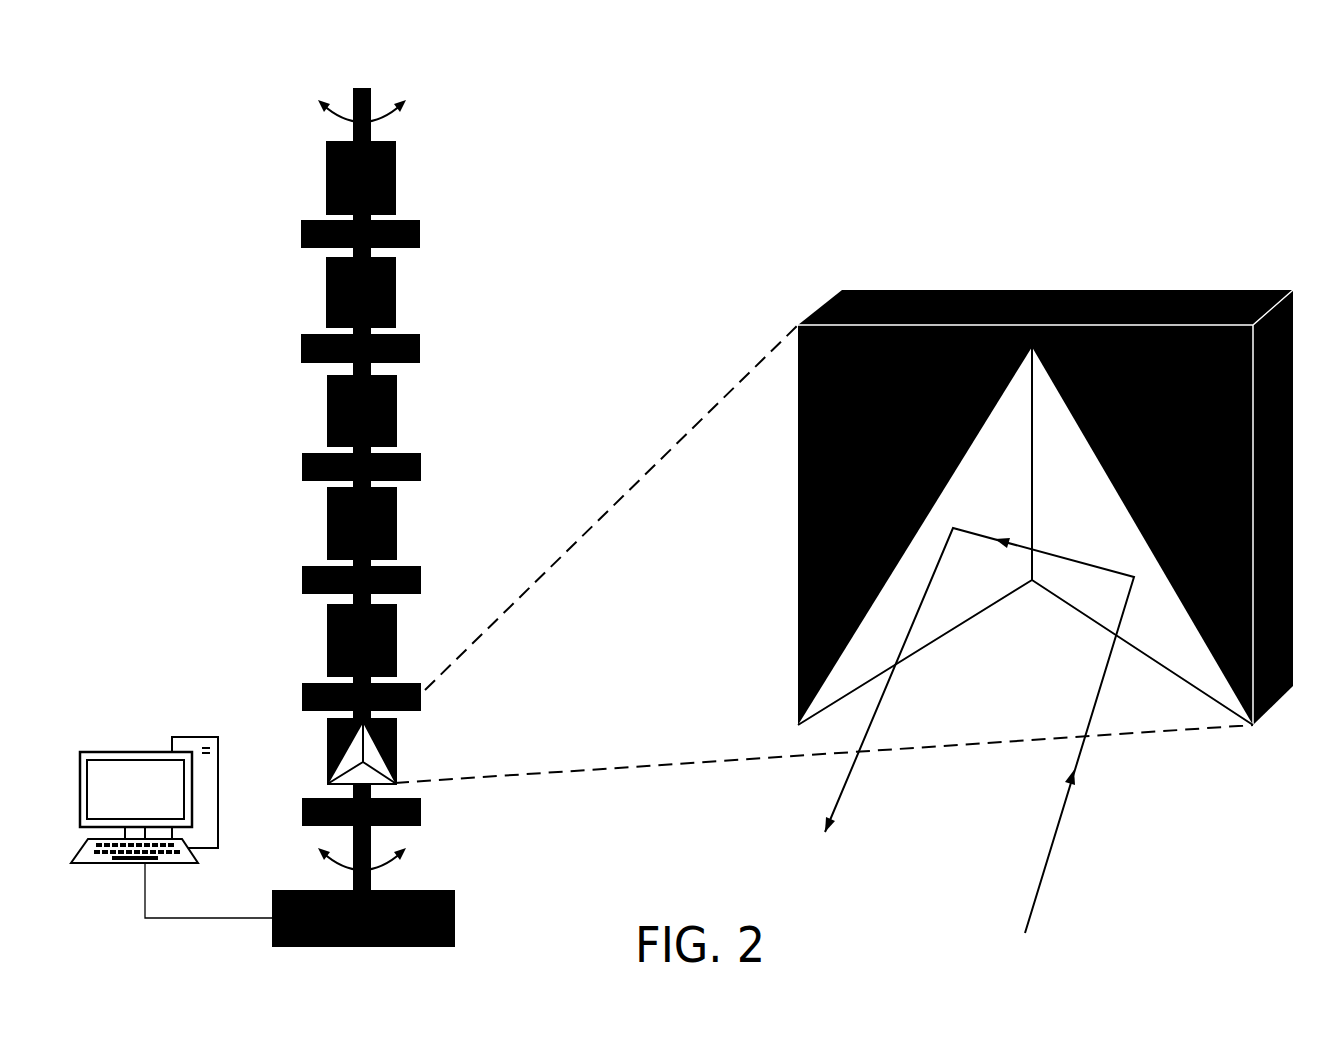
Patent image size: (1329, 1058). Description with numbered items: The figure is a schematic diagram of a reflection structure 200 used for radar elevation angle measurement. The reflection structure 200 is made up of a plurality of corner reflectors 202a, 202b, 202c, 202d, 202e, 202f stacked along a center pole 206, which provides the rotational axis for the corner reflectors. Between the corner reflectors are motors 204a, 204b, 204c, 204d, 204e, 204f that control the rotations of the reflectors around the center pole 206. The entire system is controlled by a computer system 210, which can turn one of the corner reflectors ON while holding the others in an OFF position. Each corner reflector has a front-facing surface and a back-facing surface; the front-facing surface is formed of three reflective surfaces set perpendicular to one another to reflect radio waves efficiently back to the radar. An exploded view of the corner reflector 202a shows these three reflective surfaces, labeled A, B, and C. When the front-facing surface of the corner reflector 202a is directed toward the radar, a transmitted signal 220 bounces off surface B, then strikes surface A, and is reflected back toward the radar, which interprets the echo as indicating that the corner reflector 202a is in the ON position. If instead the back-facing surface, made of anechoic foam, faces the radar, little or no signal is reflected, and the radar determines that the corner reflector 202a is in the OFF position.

The reflection structure 200 is at (196, 66).
The corner reflector 202a is at (397, 753).
The corner reflector 202b is at (397, 647).
The corner reflector 202c is at (397, 538).
The corner reflector 202d is at (397, 413).
The corner reflector 202e is at (396, 298).
The corner reflector 202f is at (396, 173).
The motor 204a is at (302, 812).
The motor 204b is at (302, 697).
The motor 204c is at (302, 580).
The motor 204d is at (302, 466).
The motor 204e is at (301, 348).
The motor 204f is at (301, 230).
The center pole 206 is at (366, 88).
The computer system 210 is at (145, 752).
The signal 220 is at (1051, 847).